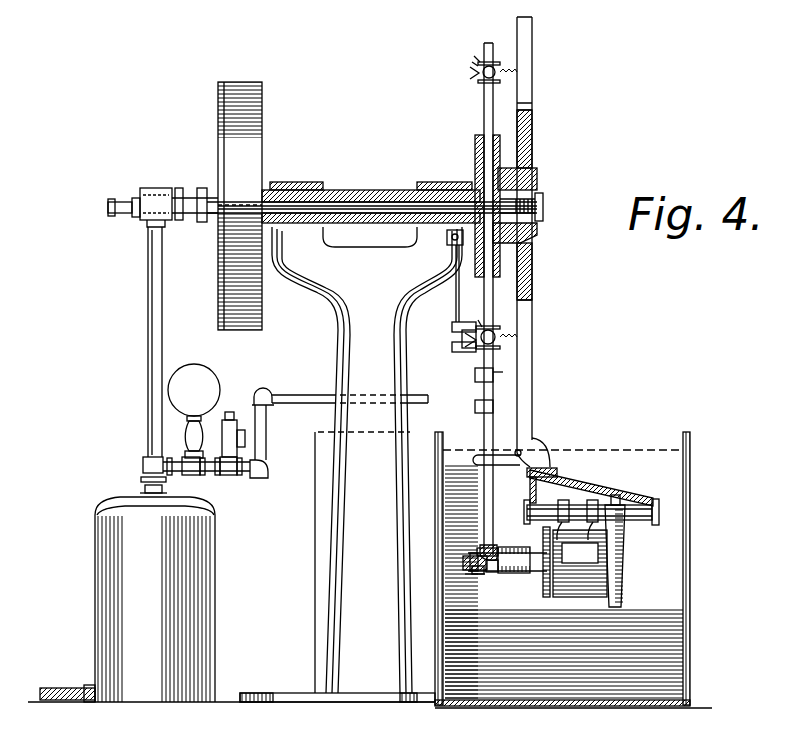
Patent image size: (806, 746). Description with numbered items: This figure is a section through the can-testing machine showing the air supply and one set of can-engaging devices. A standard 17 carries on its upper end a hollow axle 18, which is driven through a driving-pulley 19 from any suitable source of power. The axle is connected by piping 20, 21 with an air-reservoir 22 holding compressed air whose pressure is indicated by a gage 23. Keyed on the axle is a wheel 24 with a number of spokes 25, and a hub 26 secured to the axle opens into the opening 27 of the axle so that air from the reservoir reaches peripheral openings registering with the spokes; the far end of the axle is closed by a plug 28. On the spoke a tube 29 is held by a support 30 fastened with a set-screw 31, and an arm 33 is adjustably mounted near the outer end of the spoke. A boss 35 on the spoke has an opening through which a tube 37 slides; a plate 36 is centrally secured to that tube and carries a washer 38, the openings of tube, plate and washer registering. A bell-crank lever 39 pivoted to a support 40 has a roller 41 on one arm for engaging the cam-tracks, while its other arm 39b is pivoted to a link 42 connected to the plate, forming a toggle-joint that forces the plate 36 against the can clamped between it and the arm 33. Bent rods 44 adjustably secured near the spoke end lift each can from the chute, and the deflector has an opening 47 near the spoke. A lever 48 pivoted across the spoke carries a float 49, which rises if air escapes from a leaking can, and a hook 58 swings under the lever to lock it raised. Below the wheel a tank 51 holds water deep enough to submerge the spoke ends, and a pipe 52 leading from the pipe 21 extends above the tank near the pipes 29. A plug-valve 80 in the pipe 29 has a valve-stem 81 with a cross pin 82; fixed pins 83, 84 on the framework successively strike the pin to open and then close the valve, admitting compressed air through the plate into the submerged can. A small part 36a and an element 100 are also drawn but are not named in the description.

The standard 17 is at (351, 464).
The axle 18 is at (280, 188).
The driving-pulley 19 is at (250, 157).
The piping 20 is at (197, 202).
The piping 21 is at (157, 333).
The air-reservoir 22 is at (127, 599).
The gage 23 is at (185, 373).
The wheel 24 is at (530, 173).
The spokes 25 is at (527, 82).
The hub 26 is at (500, 237).
The opening 27 is at (340, 204).
The plug 28 is at (541, 207).
The tube 29 is at (483, 110).
The support 30 is at (493, 376).
The set-screw 31 is at (475, 375).
The arm 33 is at (618, 530).
The boss 35 is at (507, 568).
The plate 36 is at (540, 580).
The shaft part 36a is at (483, 572).
The tube 37 is at (508, 560).
The washer 38 is at (553, 590).
The bell-crank lever 39 is at (470, 558).
The arm 39b is at (478, 557).
The support 40 is at (633, 497).
The roller 41 is at (483, 580).
The link 42 is at (503, 543).
The rods 44 is at (560, 513).
The opening 47 is at (537, 484).
The lever 48 is at (503, 457).
The float 49 is at (553, 468).
The tank 51 is at (683, 557).
The pipe 52 is at (260, 431).
The hook 58 is at (527, 443).
The plug-valve 80 is at (490, 70).
The valve-stem 81 is at (470, 74).
The pin 82 is at (480, 66).
The pin 83 is at (467, 288).
The pin 84 is at (472, 351).
The drum 100 is at (580, 563).